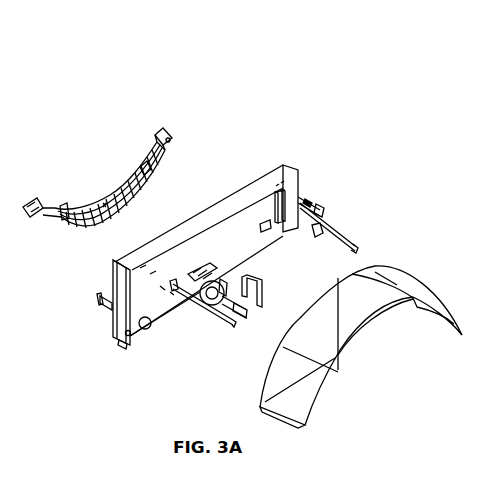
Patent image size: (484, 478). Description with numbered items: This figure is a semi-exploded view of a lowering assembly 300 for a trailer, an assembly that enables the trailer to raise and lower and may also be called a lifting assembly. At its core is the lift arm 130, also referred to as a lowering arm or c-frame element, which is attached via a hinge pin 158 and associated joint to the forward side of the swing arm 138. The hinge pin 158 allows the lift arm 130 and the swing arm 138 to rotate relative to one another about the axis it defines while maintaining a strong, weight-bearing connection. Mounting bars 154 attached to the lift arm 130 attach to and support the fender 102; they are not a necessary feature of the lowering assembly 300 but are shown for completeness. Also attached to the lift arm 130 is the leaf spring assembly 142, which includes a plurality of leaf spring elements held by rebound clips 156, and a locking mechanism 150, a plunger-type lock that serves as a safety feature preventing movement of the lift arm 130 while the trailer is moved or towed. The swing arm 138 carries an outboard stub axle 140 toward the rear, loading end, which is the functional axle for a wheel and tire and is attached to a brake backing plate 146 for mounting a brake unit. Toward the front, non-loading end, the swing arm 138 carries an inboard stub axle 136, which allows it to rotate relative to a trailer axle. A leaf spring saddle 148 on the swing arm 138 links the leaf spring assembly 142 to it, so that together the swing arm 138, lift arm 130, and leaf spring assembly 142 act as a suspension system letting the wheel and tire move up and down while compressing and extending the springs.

The lowering assembly 300 is at (230, 57).
The fender 102 is at (407, 276).
The lift arm 130 is at (285, 170).
The inboard stub axle 136 is at (102, 309).
The swing arm 138 is at (162, 318).
The outboard stub axle 140 is at (245, 316).
The leaf spring assembly 142 is at (155, 153).
The brake backing plate 146 is at (222, 282).
The leaf spring saddle 148 is at (262, 276).
The locking mechanism 150 is at (306, 197).
The mounting bars 154 is at (216, 318).
The rebound clips 156 is at (140, 170).
The hinge pin 158 is at (119, 344).